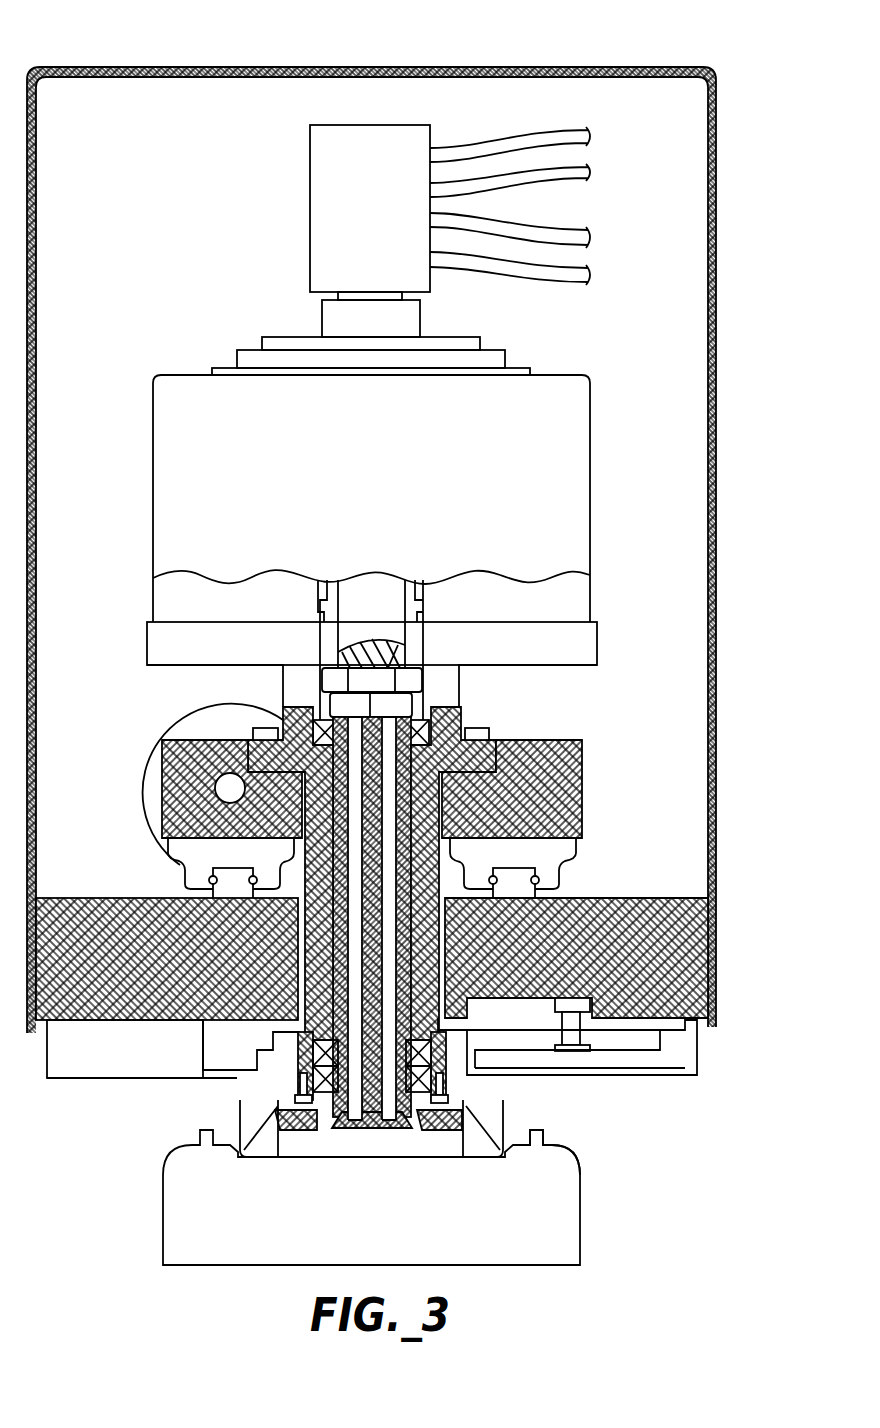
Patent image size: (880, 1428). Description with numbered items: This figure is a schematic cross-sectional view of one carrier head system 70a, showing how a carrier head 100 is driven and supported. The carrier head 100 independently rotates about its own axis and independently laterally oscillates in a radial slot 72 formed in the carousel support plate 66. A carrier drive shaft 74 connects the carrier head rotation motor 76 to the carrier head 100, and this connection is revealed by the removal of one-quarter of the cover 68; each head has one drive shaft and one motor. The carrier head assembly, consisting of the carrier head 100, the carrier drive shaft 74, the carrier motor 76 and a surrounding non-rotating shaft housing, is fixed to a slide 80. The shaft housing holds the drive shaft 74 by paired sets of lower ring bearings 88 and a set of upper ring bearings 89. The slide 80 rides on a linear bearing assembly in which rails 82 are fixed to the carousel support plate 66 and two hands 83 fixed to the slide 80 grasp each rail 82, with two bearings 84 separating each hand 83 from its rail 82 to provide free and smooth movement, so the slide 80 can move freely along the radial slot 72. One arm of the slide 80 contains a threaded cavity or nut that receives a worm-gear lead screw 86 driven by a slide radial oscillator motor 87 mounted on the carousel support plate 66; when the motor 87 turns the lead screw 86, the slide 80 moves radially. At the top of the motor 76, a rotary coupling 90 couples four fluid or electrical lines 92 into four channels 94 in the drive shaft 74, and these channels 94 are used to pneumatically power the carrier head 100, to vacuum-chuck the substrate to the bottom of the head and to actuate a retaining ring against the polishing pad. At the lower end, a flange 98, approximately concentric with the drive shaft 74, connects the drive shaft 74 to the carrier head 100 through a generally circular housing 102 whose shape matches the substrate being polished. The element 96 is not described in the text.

The carousel support plate 66 is at (27, 1015).
The cover 68 is at (713, 462).
The carrier head system 70a is at (132, 58).
The radial slot 72 is at (300, 1010).
The carrier drive shaft 74 is at (418, 658).
The carrier head rotation motor 76 is at (605, 505).
The slide 80 is at (578, 740).
The rail 82 is at (212, 880).
The hand 83 is at (190, 866).
The bearing 84 is at (540, 884).
The worm-gear lead screw 86 is at (226, 790).
The slide radial oscillator motor 87 is at (215, 722).
The lower ring bearings 88 is at (313, 1078).
The upper ring bearings 89 is at (430, 710).
The rotary coupling 90 is at (375, 125).
The fluid or electrical lines 92 is at (512, 130).
The channels 94 is at (387, 1093).
The retainer 96 is at (288, 1115).
The flange 98 is at (495, 1122).
The carrier head 100 is at (672, 1227).
The housing 102 is at (590, 1183).